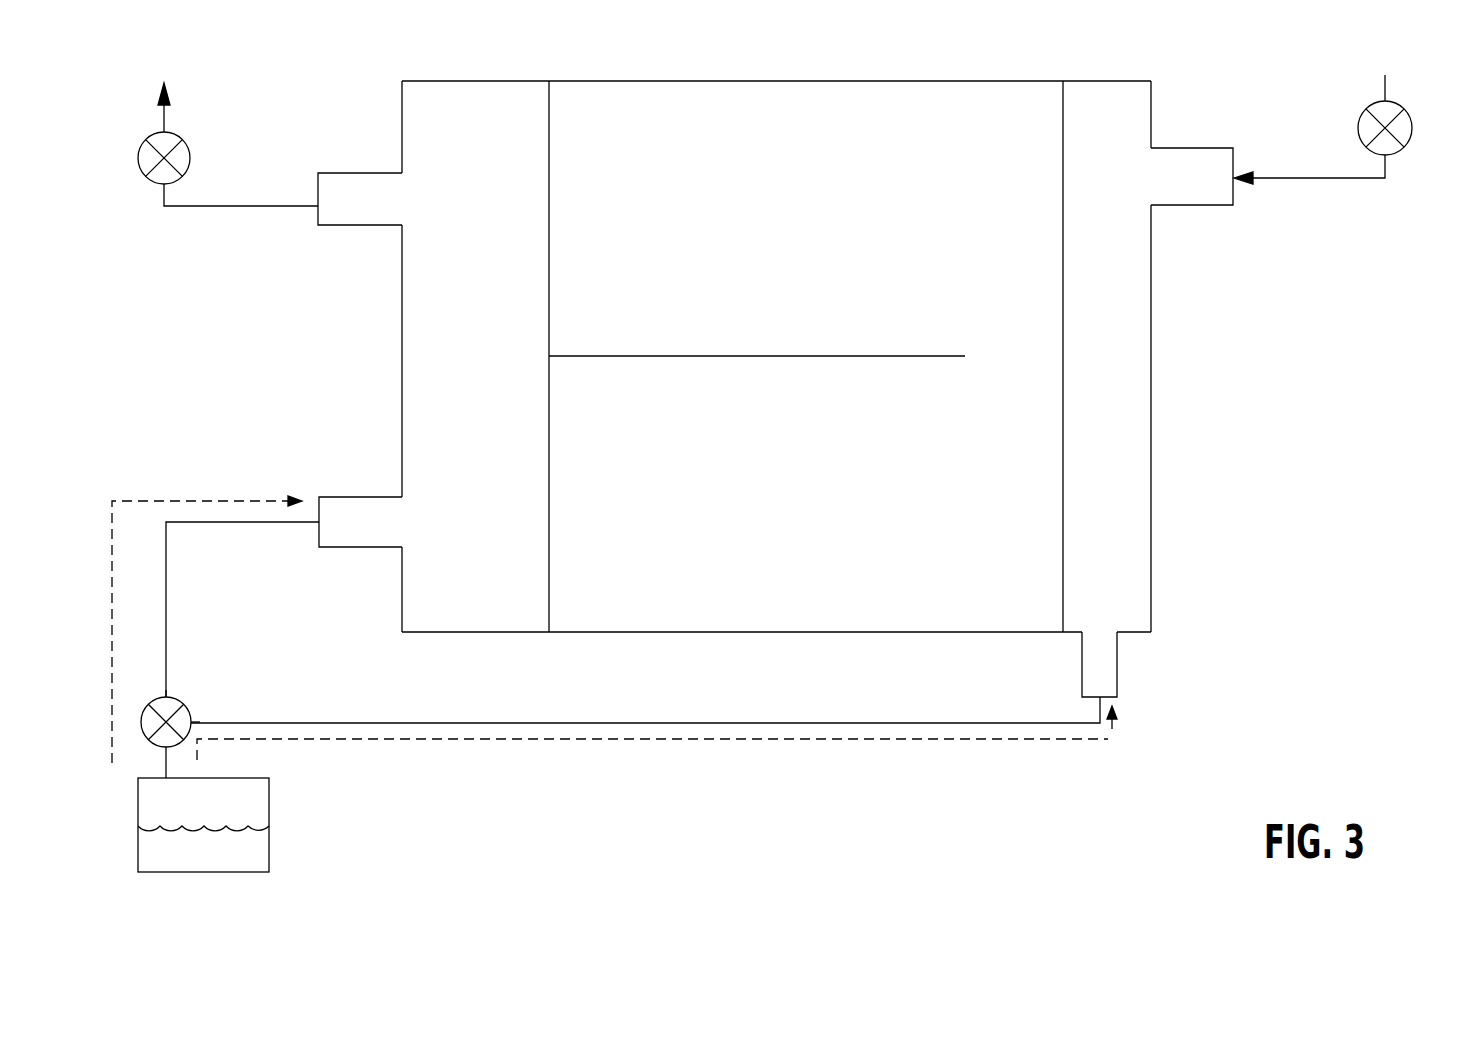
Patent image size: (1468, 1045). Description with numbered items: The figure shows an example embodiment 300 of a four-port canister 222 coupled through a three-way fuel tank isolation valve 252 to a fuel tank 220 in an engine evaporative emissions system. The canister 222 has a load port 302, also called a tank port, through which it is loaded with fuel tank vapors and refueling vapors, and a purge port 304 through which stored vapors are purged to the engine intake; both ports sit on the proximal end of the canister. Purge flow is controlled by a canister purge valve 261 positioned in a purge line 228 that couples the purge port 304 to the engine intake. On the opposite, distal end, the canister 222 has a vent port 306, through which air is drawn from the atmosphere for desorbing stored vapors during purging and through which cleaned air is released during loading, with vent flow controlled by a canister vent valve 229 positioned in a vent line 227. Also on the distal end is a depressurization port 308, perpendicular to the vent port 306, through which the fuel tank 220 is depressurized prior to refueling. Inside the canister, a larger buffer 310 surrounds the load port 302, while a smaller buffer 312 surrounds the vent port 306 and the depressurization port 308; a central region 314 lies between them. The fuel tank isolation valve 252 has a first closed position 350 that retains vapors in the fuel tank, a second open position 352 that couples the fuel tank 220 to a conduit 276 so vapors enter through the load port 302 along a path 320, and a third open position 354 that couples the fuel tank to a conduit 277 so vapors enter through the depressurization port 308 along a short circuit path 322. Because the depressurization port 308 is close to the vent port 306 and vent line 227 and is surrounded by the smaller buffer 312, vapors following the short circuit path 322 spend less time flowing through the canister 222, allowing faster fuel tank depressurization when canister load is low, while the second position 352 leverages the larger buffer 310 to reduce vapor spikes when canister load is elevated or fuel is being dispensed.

The example embodiment 300 is at (343, 55).
The canister 222 is at (665, 81).
The purge port 304 is at (360, 173).
The canister purge valve 261 is at (188, 153).
The purge line 228 is at (253, 208).
The canister vent valve 229 is at (1409, 118).
The vent line 227 is at (1338, 178).
The vent port 306 is at (1187, 205).
The canister chamber 314 is at (757, 297).
The larger buffer 310 is at (505, 356).
The smaller buffer 312 is at (1092, 356).
The load port 302 is at (368, 497).
The path 320 is at (228, 501).
The conduit 276 is at (167, 548).
The second position 352 is at (150, 702).
The fuel tank isolation valve 252 is at (181, 702).
The third position 354 is at (197, 718).
The conduit 277 is at (500, 723).
The depressurization port 308 is at (1117, 652).
The first position 350 is at (161, 754).
The fuel tank 220 is at (270, 858).
The short circuit path 322 is at (652, 769).